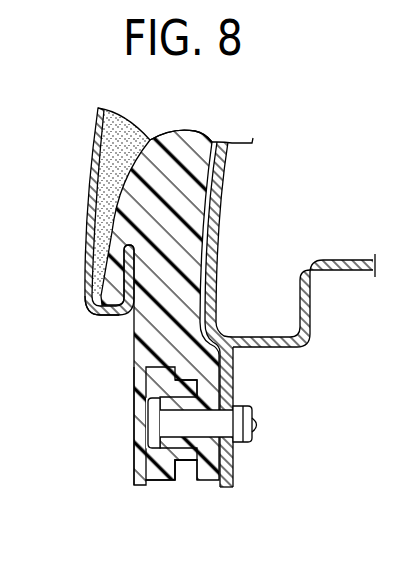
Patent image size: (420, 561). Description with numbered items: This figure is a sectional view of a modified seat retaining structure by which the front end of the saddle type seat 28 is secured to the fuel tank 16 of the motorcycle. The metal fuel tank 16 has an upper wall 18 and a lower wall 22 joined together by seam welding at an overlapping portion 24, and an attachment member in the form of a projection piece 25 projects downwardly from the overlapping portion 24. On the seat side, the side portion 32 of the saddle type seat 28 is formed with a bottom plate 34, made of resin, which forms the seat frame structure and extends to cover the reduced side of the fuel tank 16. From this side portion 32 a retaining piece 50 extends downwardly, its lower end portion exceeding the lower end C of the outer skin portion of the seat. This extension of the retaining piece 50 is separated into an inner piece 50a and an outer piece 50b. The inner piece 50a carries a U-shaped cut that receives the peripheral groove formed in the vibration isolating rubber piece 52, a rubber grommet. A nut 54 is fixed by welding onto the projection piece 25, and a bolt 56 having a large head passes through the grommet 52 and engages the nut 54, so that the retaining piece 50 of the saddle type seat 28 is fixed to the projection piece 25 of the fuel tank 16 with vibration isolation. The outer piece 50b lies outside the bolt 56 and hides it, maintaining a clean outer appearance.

The fuel tank 16 is at (290, 328).
The upper wall 18 is at (230, 179).
The lower wall 22 is at (311, 311).
The overlapping portion 24 is at (235, 358).
The projection piece 25 is at (235, 480).
The saddle type seat 28 is at (92, 211).
The side portion 32 is at (90, 216).
The bottom plate 34 is at (199, 142).
The retaining piece 50 is at (152, 338).
The inner piece 50a is at (195, 382).
The outer piece 50b is at (136, 449).
The vibration isolating rubber piece 52 is at (162, 468).
The nut 54 is at (259, 428).
The bolt 56 is at (183, 462).
The lower end of the outer skin portion C is at (90, 326).